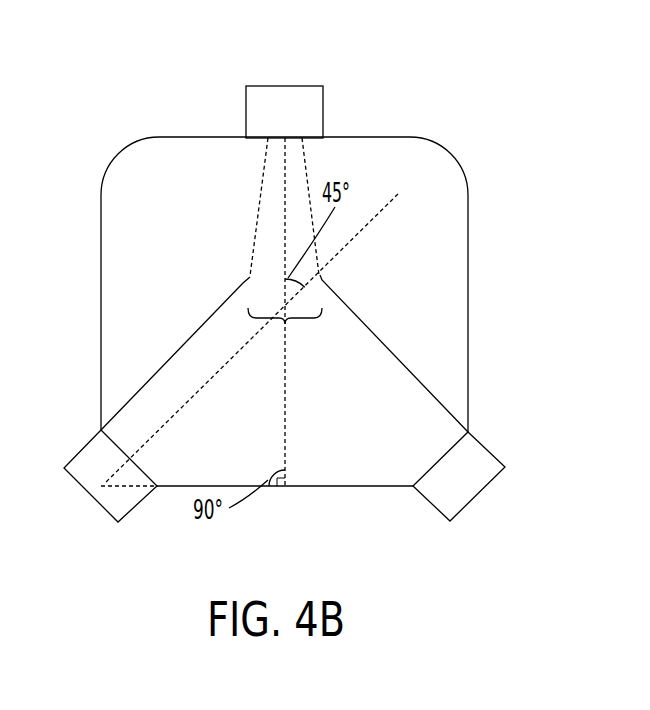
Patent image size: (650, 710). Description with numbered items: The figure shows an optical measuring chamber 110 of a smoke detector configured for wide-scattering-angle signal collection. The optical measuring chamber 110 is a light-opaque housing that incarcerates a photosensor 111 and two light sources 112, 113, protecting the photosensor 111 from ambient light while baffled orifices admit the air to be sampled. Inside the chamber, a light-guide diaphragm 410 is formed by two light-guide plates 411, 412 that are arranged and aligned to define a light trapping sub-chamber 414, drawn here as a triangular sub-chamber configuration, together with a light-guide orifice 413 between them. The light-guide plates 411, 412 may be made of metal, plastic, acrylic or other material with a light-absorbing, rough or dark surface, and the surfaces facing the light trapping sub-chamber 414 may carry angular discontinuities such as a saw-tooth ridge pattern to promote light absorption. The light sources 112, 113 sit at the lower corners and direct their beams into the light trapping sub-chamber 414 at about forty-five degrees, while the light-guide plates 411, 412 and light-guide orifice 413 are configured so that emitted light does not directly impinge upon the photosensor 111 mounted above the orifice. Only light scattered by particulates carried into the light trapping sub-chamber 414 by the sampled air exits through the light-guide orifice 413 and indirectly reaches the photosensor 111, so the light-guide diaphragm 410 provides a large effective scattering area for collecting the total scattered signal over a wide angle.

The optical measuring chamber 110 is at (470, 283).
The photosensor 111 is at (283, 85).
The light source 112 is at (88, 490).
The light source 113 is at (477, 497).
The light-guide diaphragm 410 is at (192, 319).
The light-guide plate 411 is at (162, 368).
The light-guide plate 412 is at (417, 375).
The light-guide orifice 413 is at (285, 337).
The light trapping sub-chamber 414 is at (333, 458).